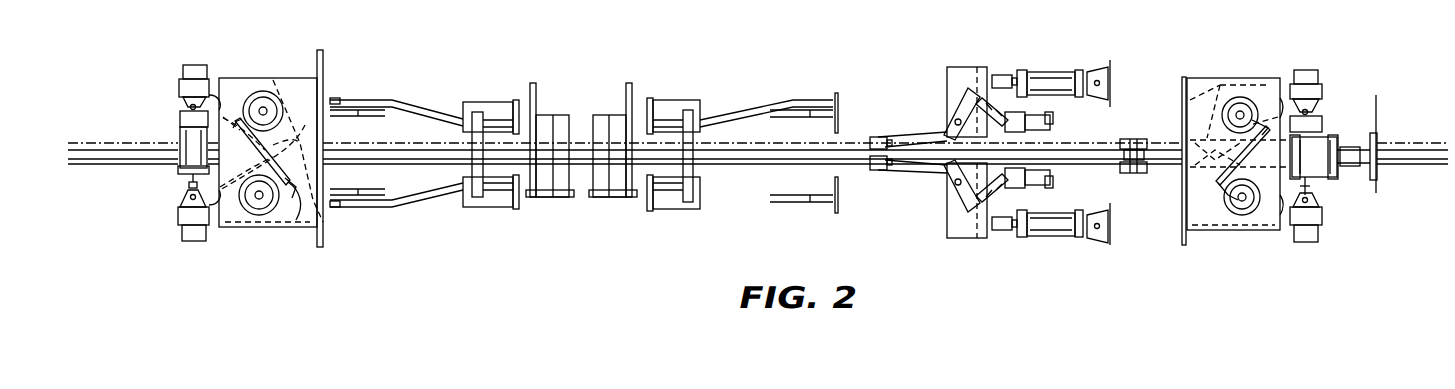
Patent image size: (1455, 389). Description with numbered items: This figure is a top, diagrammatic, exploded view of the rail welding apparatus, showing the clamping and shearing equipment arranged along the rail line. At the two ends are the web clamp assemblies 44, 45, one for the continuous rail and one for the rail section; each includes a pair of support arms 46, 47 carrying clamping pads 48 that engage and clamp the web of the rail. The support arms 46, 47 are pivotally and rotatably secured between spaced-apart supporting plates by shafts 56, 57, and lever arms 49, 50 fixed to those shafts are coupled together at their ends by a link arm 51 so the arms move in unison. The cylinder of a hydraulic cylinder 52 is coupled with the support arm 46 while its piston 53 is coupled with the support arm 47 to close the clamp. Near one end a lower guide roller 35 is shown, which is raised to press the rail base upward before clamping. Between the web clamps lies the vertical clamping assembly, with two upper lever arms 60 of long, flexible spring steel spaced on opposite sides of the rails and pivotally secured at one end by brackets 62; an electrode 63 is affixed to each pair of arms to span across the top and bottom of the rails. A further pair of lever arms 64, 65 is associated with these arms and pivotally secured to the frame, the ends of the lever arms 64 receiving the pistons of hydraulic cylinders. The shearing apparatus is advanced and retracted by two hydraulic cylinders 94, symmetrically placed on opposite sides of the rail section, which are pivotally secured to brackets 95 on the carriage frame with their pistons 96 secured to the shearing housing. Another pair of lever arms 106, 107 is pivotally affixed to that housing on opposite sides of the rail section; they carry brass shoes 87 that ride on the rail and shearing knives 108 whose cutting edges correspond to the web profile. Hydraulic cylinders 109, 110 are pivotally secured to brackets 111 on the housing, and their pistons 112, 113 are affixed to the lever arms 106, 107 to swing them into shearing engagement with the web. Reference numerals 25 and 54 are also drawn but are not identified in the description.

The drive shaft 25 is at (1355, 135).
The lower guide roller 35 is at (1135, 138).
The web clamp assembly 44 is at (305, 56).
The web clamp assembly 45 is at (1250, 52).
The support arm 46 is at (215, 80).
The support arm 47 is at (213, 218).
The clamping pad 48 is at (328, 215).
The lever arm 49 is at (237, 121).
The lever arm 50 is at (296, 220).
The link arm 51 is at (250, 150).
The hydraulic cylinder 52 is at (188, 132).
The piston 53 is at (188, 185).
The frame plate 54 is at (1200, 78).
The shaft 56 is at (263, 108).
The shaft 57 is at (262, 210).
The upper lever arm 60 is at (400, 110).
The bracket 62 is at (385, 113).
The electrode 63 is at (560, 115).
The lever arm 64 is at (413, 106).
The lever arm 65 is at (410, 200).
The brass shoe 87 is at (880, 137).
The hydraulic cylinder 94 is at (1050, 70).
The bracket 95 is at (1100, 67).
The piston 96 is at (1005, 75).
The lever arm 106 is at (938, 130).
The lever arm 107 is at (950, 170).
The shearing knife 108 is at (874, 135).
The hydraulic cylinder 109 is at (1010, 105).
The hydraulic cylinder 110 is at (1010, 195).
The bracket 111 is at (1040, 128).
The piston 112 is at (968, 88).
The piston 113 is at (960, 195).